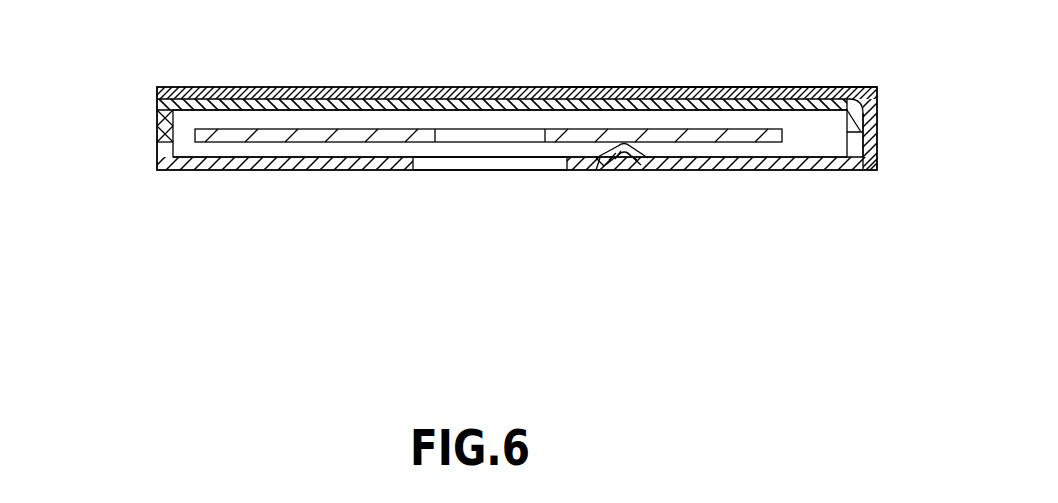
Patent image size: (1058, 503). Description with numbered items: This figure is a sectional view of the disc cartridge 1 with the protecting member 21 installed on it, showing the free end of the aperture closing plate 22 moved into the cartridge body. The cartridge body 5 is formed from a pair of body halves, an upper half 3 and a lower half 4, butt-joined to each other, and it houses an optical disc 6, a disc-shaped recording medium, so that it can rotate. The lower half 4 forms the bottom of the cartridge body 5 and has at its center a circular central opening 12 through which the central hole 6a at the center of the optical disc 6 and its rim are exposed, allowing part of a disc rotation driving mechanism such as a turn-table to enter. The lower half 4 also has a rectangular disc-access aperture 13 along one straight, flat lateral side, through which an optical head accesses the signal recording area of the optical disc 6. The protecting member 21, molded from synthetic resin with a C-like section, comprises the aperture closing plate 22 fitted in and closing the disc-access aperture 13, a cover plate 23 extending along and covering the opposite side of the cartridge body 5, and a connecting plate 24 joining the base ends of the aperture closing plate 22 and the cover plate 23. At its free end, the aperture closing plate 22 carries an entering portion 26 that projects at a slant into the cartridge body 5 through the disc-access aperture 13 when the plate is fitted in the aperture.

The disc cartridge 1 is at (811, 103).
The upper half 3 is at (157, 110).
The lower half 4 is at (157, 148).
The cartridge body 5 is at (102, 88).
The optical disc 6 is at (298, 135).
The central hole 6a is at (540, 135).
The central opening 12 is at (420, 168).
The disc-access aperture 13 is at (633, 170).
The protecting member 21 is at (467, 87).
The aperture closing plate 22 is at (797, 170).
The cover plate 23 is at (659, 87).
The connecting plate 24 is at (877, 148).
The entering portion 26 is at (598, 170).